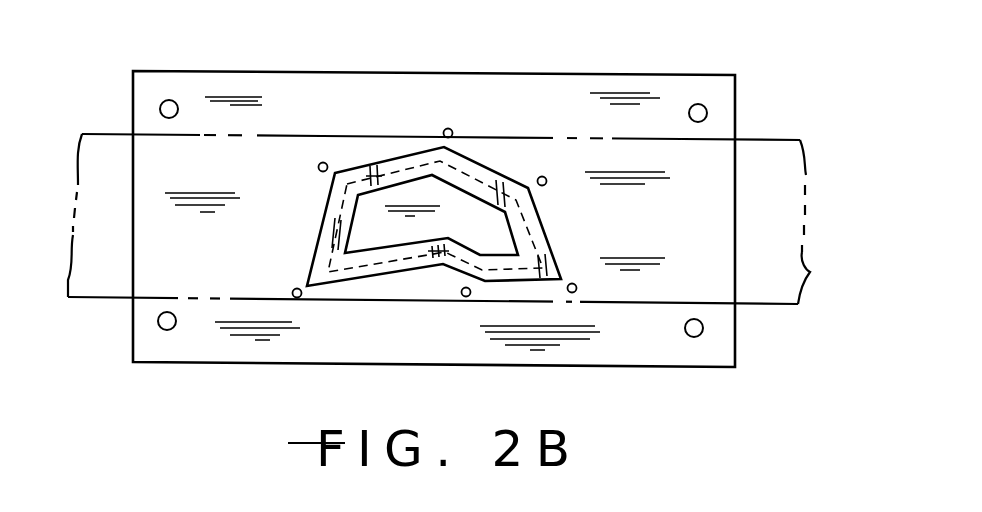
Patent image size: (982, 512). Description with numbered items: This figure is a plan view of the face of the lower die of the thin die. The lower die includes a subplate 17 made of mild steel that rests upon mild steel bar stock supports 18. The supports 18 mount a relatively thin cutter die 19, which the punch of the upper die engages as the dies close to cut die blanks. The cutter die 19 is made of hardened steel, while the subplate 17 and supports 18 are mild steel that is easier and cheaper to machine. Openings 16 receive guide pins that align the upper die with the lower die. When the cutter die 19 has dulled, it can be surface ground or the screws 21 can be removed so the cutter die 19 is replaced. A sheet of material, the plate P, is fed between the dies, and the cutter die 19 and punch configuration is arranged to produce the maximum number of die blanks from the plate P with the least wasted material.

The openings 16 is at (171, 100).
The subplate 17 is at (737, 170).
The bar stock supports 18 is at (516, 148).
The cutter die 19 is at (400, 155).
The screws 21 is at (323, 162).
The plate P is at (823, 272).